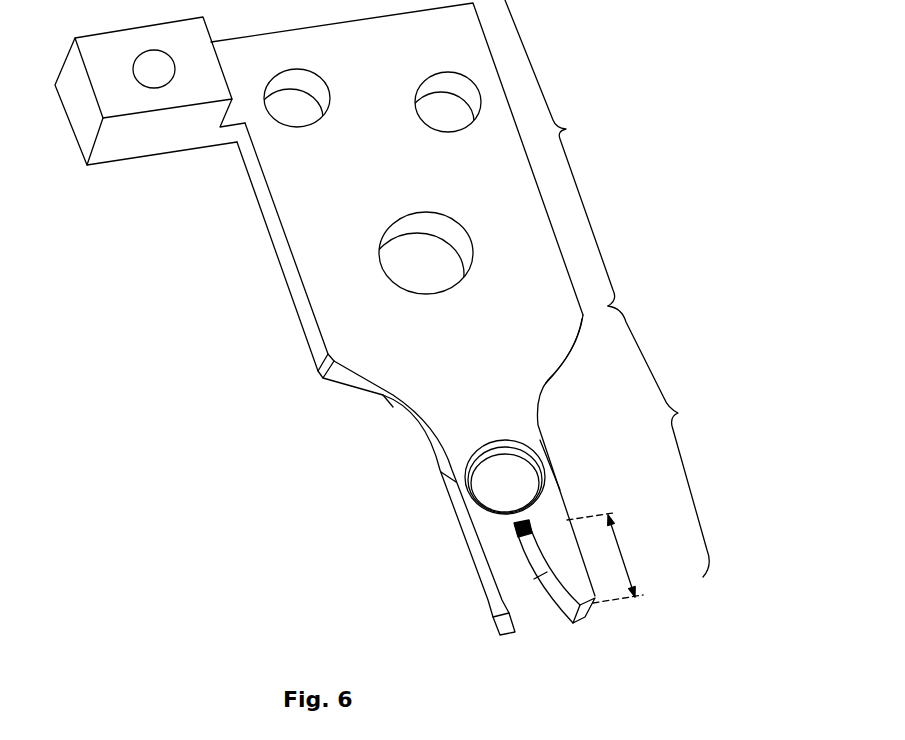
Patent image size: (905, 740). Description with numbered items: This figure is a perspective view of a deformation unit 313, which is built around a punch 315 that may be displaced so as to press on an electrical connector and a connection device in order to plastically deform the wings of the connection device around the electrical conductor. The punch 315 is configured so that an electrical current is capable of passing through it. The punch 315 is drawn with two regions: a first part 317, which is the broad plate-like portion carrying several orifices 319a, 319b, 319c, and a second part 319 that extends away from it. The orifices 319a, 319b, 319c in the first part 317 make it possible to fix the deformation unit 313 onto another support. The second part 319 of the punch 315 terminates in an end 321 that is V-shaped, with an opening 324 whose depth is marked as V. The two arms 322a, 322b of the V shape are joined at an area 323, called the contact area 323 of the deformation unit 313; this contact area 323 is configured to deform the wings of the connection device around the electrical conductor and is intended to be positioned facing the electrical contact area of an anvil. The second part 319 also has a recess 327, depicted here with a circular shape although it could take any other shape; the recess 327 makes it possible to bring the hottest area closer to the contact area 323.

The deformation unit 313 is at (390, 358).
The punch 315 is at (533, 325).
The first part 317 is at (415, 298).
The second part 319 is at (481, 420).
The orifice 319a is at (283, 106).
The orifice 319b is at (438, 110).
The orifice 319c is at (403, 257).
The end 321 is at (485, 593).
The arm 322a is at (511, 633).
The arm 322b is at (587, 630).
The contact area 323 is at (515, 524).
The opening 324 is at (538, 597).
The recess 327 is at (503, 492).
The depth V is at (623, 557).